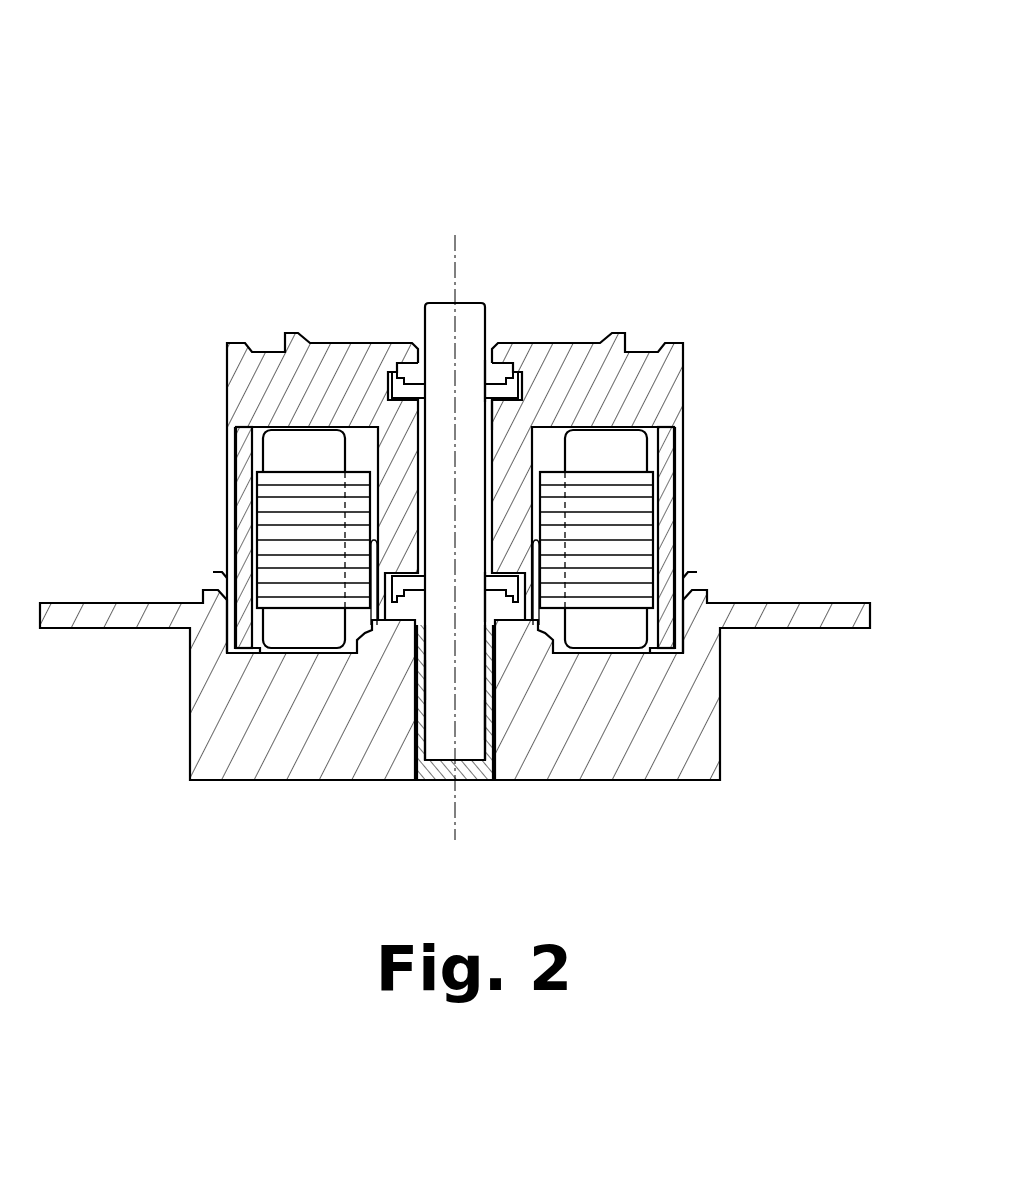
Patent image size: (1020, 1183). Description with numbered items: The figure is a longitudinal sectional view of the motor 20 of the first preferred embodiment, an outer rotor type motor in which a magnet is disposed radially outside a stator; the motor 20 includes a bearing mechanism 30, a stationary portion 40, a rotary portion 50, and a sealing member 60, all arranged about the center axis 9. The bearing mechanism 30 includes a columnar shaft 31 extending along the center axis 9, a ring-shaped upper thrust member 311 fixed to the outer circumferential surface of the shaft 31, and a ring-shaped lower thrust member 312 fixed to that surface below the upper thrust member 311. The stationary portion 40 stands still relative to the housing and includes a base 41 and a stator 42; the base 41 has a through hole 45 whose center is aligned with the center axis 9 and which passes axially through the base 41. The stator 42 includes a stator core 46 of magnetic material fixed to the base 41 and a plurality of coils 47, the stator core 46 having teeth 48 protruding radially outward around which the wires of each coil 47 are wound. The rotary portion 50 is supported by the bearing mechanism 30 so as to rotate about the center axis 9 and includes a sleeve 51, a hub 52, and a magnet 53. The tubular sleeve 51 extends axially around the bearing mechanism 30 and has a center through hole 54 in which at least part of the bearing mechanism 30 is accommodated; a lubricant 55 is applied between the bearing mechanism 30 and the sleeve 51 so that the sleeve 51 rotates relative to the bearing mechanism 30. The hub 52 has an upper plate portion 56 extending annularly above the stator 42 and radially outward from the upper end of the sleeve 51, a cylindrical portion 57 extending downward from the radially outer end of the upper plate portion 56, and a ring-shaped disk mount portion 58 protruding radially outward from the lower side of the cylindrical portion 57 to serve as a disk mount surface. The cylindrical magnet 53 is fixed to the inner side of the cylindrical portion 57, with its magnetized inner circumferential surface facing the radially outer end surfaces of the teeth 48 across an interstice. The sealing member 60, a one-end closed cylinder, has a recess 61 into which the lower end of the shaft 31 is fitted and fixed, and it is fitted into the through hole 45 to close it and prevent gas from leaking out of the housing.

The motor 20 is at (551, 105).
The center axis 9 is at (454, 256).
The bearing mechanism 30 is at (460, 503).
The shaft 31 is at (473, 313).
The upper thrust member 311 is at (495, 365).
The lower thrust member 312 is at (500, 605).
The stationary portion 40 is at (455, 745).
The base 41 is at (692, 758).
The stator 42 is at (573, 520).
The through hole 45 is at (447, 660).
The stator core 46 is at (625, 493).
The coil 47 is at (623, 455).
The teeth 48 is at (637, 522).
The rotary portion 50 is at (429, 433).
The sleeve 51 is at (392, 457).
The hub 52 is at (425, 433).
The magnet 53 is at (667, 550).
The center through hole 54 is at (500, 421).
The lubricant 55 is at (520, 362).
The upper plate portion 56 is at (290, 403).
The cylindrical portion 57 is at (235, 442).
The disk mount portion 58 is at (217, 572).
The sealing member 60 is at (417, 709).
The recess 61 is at (465, 703).